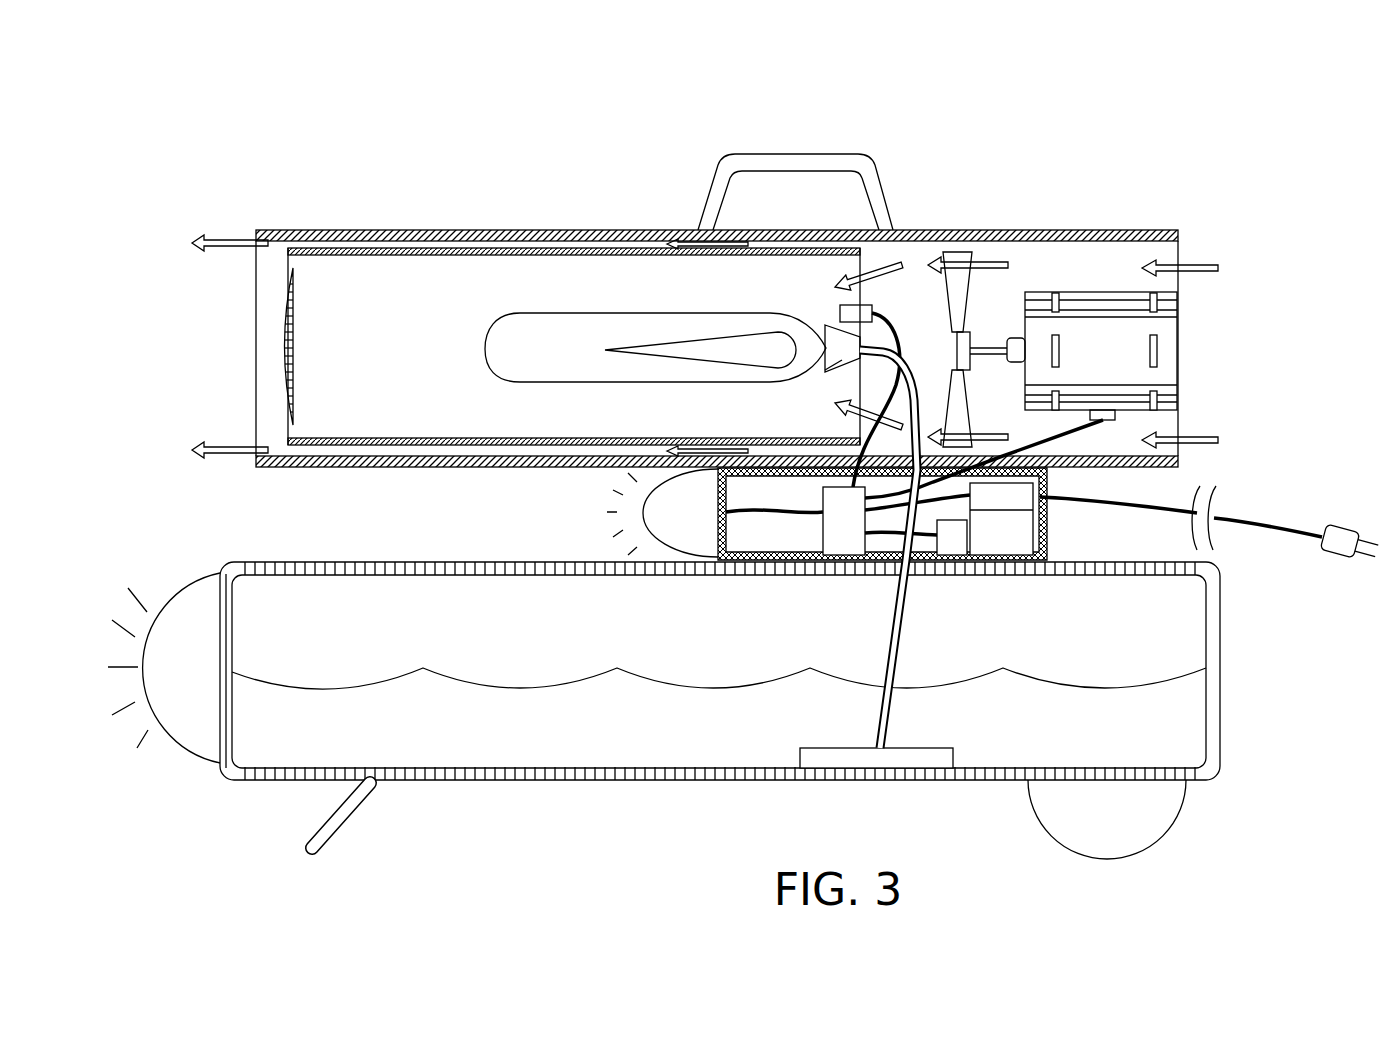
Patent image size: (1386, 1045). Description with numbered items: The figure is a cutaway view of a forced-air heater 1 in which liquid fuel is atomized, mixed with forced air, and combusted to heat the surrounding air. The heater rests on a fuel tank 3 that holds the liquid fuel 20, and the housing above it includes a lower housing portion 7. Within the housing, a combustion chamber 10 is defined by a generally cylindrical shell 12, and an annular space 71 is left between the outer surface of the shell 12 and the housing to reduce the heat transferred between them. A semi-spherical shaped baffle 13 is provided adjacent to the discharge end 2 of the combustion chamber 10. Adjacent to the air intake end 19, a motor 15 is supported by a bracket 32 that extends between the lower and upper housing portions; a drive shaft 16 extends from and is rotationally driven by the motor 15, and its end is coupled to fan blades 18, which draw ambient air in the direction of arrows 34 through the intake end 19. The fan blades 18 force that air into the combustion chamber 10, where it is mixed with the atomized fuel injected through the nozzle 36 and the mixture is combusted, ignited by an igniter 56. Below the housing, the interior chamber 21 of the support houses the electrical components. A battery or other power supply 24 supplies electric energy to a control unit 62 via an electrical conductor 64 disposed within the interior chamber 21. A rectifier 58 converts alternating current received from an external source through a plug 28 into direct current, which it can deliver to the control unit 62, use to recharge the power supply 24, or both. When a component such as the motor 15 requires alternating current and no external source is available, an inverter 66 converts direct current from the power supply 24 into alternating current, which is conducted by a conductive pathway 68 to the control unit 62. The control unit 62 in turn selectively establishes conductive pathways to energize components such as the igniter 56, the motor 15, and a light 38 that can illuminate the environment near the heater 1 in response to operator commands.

The forced-air heater 1 is at (1099, 134).
The discharge end 2 is at (256, 232).
The fuel tank 3 is at (1220, 642).
The lower housing portion 7 is at (330, 468).
The combustion chamber 10 is at (370, 339).
The outer cylinder / cylindrical shell 12 is at (460, 249).
The semi-spherical shaped baffle 13 is at (287, 327).
The motor 15 is at (1160, 327).
The drive shaft 16 is at (1000, 340).
The fan blades 18 is at (955, 260).
The air intake end 19 is at (1180, 231).
The liquid fuel 20 is at (485, 742).
The interior chamber 21 is at (781, 549).
The power supply 24 is at (1012, 530).
The plug 28 is at (1341, 536).
The bracket 32 is at (1178, 415).
The arrows 34 is at (1163, 268).
The nozzle 36 is at (838, 360).
The light 38 is at (198, 722).
The igniter 56 is at (852, 313).
The rectifier 58 is at (1008, 498).
The control unit 62 is at (850, 532).
The electrical conductor 64 is at (893, 515).
The inverter 66 is at (952, 540).
The conductive pathway 68 is at (922, 542).
The annular space 71 is at (357, 248).